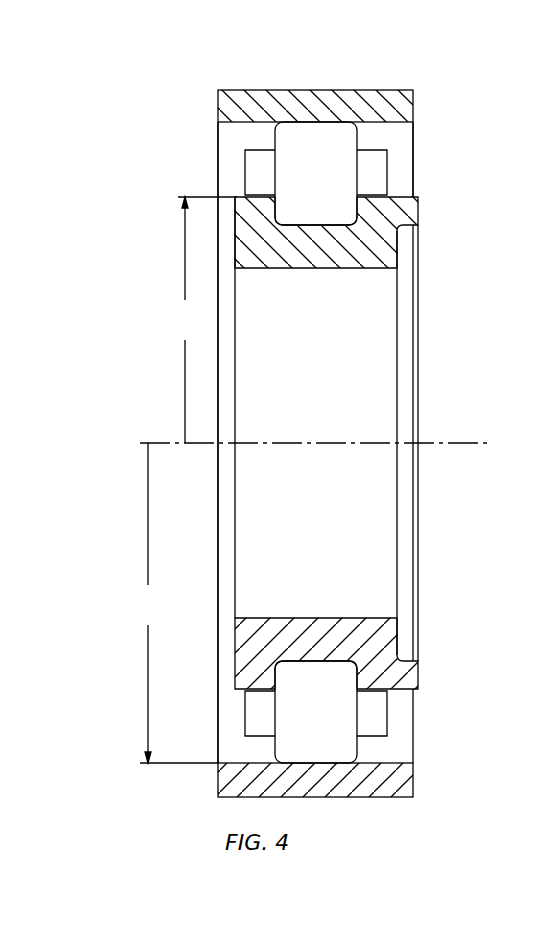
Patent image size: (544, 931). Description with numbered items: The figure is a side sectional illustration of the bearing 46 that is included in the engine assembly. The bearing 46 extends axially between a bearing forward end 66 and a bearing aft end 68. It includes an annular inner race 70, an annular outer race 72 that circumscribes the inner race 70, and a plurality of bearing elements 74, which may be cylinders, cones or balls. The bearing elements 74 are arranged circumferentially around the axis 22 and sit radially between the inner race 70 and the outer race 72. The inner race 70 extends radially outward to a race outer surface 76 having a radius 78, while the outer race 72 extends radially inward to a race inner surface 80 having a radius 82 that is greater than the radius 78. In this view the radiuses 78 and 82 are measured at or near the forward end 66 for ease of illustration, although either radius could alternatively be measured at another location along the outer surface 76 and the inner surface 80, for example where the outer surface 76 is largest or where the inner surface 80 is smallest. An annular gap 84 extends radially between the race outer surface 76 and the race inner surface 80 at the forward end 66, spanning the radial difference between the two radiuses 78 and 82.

The bearing 46 is at (117, 95).
The bearing forward end 66 is at (218, 105).
The bearing aft end 68 is at (413, 103).
The annular inner race 70 is at (420, 212).
The annular outer race 72 is at (362, 90).
The bearing elements 74 is at (332, 183).
The race outer surface 76 is at (240, 198).
The radius 78 is at (205, 320).
The race inner surface 80 is at (240, 763).
The radius 82 is at (176, 603).
The annular gap 84 is at (219, 147).
The axis 22 is at (465, 443).